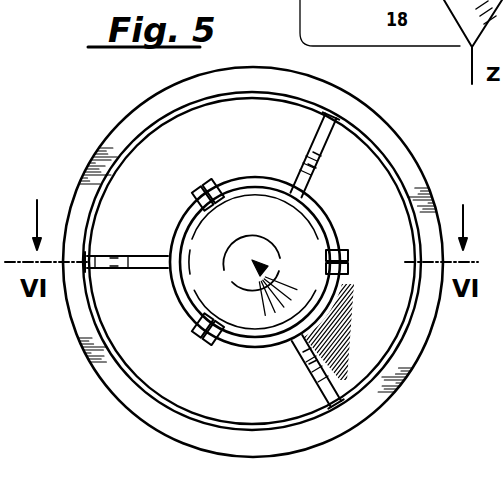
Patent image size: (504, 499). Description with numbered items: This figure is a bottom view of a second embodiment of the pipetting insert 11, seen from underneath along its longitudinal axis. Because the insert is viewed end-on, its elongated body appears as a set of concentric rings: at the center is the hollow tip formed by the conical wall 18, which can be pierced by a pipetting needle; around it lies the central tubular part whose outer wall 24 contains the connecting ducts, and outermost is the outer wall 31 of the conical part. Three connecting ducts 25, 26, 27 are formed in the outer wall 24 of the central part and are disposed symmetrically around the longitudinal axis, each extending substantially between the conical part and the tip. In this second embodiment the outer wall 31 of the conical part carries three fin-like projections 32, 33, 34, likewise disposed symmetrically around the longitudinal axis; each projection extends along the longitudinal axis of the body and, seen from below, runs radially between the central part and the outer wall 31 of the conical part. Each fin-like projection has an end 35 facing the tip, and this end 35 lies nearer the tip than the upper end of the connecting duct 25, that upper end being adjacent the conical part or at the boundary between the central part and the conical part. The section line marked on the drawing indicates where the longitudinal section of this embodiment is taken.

The pipetting insert 11 is at (100, 126).
The conical wall 18 is at (204, 270).
The outer wall 24 is at (180, 233).
The connecting duct 25 is at (342, 258).
The connecting duct 26 is at (209, 183).
The connecting duct 27 is at (211, 333).
The outer wall 31 is at (285, 396).
The fin-like projection 32 is at (100, 268).
The fin-like projection 33 is at (343, 397).
The fin-like projection 34 is at (320, 140).
The end 35 is at (312, 167).